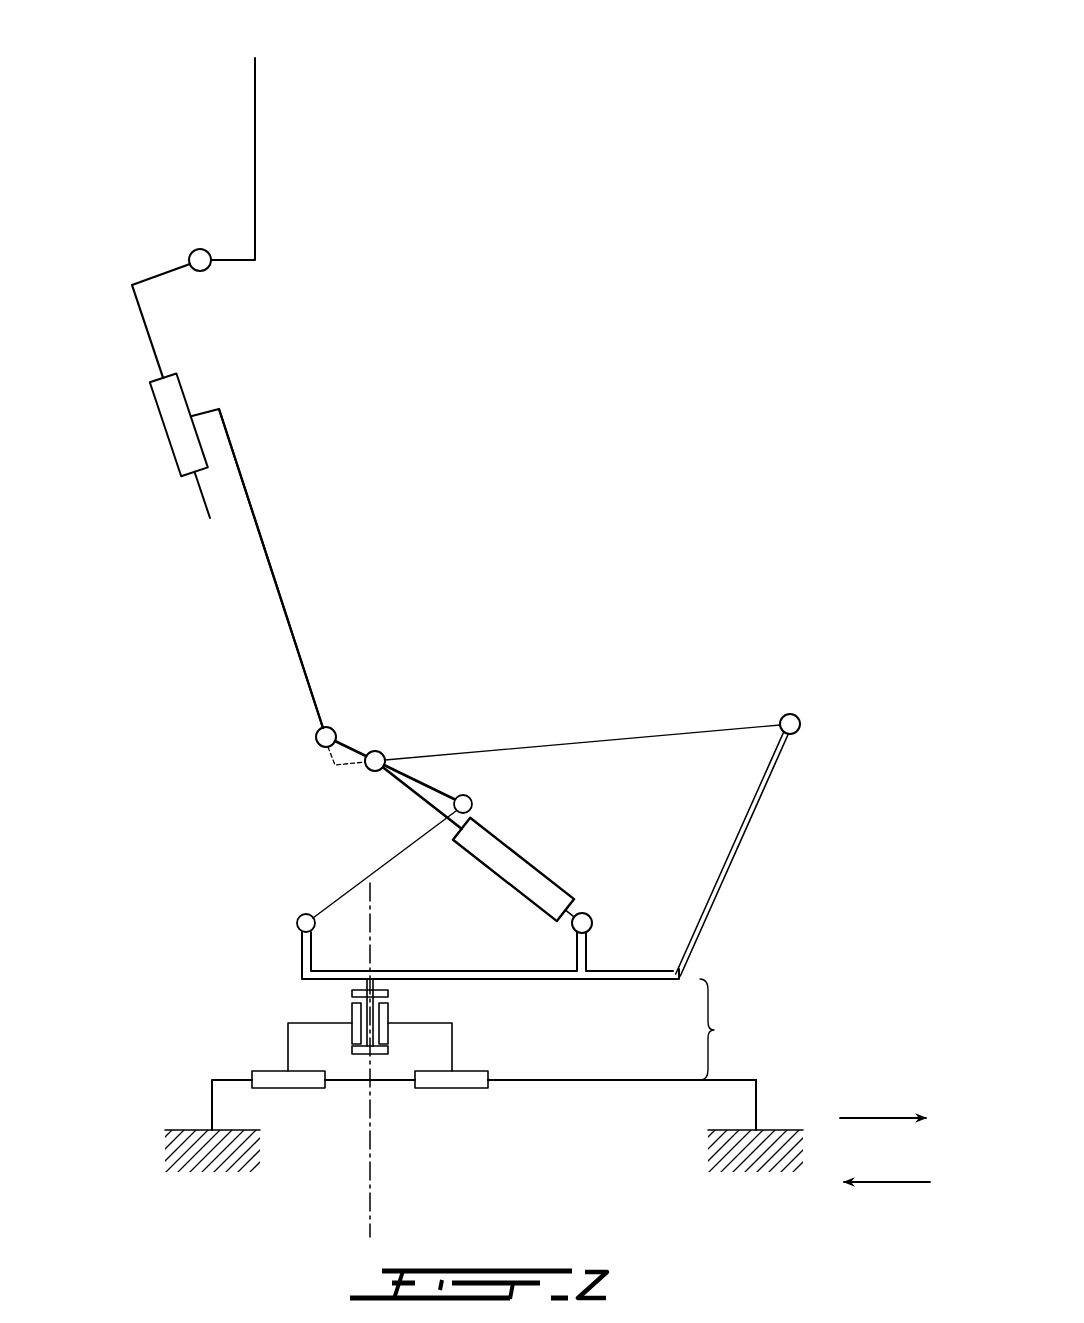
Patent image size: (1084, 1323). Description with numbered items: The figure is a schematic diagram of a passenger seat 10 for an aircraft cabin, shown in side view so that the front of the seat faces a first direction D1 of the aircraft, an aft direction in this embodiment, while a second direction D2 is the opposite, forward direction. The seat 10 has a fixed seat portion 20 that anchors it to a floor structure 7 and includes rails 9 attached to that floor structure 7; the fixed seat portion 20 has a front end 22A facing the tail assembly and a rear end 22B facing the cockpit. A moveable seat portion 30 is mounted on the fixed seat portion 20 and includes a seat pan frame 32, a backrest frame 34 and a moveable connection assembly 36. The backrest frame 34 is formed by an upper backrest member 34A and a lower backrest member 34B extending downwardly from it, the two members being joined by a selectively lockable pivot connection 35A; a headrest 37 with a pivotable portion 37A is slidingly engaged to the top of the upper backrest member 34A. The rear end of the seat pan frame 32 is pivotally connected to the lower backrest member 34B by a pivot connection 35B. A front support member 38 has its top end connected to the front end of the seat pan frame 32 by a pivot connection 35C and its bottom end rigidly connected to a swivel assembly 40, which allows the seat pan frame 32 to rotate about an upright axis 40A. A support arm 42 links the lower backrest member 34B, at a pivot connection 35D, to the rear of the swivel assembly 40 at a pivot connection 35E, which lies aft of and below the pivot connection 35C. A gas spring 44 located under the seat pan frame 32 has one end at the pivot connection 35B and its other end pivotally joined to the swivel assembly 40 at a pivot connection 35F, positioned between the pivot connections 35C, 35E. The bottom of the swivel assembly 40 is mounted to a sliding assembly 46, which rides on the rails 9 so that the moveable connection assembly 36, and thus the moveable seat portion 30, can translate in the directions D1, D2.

The passenger seat 10 is at (611, 183).
The pivotable portion 37A is at (258, 127).
The headrest 37 is at (130, 283).
The backrest frame 34 is at (275, 551).
The upper backrest member 34A is at (283, 597).
The lower backrest member 34B is at (423, 778).
The selectively lockable pivot connection 35A is at (316, 737).
The pivot connection 35B is at (365, 764).
The pivot connection 35C is at (795, 712).
The pivot connection 35D is at (473, 800).
The pivot connection 35E is at (296, 925).
The pivot connection 35F is at (592, 921).
The seat pan frame 32 is at (684, 729).
The moveable seat portion 30 is at (836, 717).
The front support member 38 is at (745, 836).
The support arm 42 is at (347, 892).
The gas spring 44 is at (540, 884).
The swivel assembly 40 is at (517, 992).
The upright axis 40A is at (372, 1172).
The sliding assembly 46 is at (270, 1038).
The moveable connection assembly 36 is at (725, 1029).
The fixed seat portion 20 is at (480, 1068).
The front end 22A is at (754, 1062).
The rear end 22B is at (190, 1095).
The rails 9 is at (572, 1082).
The floor structure 7 is at (760, 1145).
The first direction D1 is at (883, 1104).
The second direction D2 is at (887, 1200).